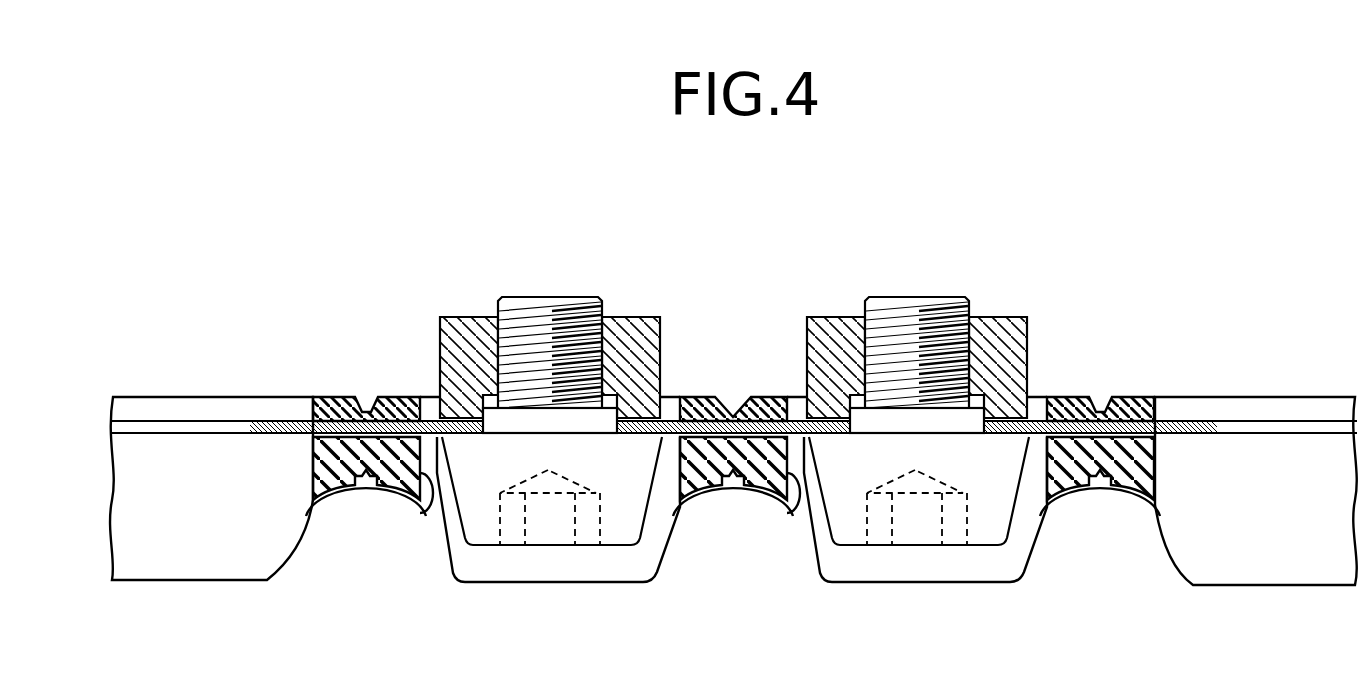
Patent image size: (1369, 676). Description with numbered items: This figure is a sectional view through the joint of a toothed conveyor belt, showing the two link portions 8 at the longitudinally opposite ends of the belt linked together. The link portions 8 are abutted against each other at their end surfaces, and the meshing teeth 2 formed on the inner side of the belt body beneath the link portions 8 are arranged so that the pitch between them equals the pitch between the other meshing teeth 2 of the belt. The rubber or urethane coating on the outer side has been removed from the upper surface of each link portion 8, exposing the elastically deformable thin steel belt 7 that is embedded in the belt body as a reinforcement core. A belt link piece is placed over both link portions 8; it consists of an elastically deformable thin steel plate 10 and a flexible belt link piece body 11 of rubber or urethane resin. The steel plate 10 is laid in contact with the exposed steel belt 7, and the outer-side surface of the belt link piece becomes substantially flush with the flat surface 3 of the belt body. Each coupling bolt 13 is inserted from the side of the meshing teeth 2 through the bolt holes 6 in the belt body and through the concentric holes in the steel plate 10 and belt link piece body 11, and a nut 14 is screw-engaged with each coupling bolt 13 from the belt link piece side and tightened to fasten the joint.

The meshing teeth 2 is at (853, 585).
The flat surface 3 is at (333, 395).
The bolt holes 6 is at (798, 502).
The steel belt 7 is at (1207, 430).
The link portion 8 is at (392, 378).
The steel plate 10 is at (802, 397).
The belt link piece body 11 is at (768, 395).
The coupling bolt 13 is at (1000, 512).
The nut 14 is at (1005, 330).